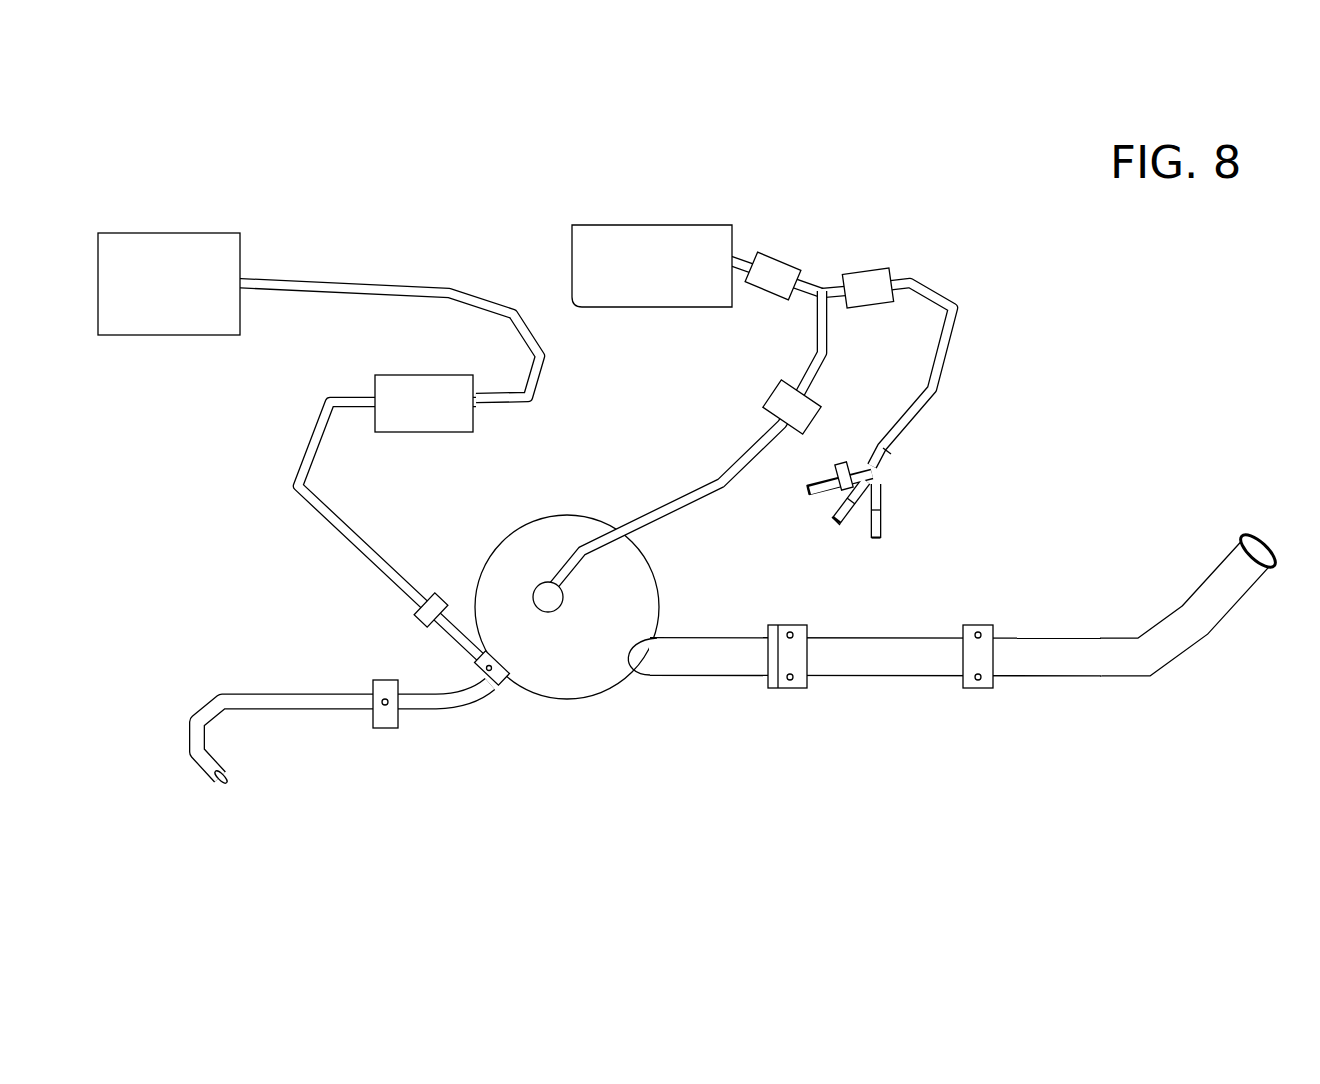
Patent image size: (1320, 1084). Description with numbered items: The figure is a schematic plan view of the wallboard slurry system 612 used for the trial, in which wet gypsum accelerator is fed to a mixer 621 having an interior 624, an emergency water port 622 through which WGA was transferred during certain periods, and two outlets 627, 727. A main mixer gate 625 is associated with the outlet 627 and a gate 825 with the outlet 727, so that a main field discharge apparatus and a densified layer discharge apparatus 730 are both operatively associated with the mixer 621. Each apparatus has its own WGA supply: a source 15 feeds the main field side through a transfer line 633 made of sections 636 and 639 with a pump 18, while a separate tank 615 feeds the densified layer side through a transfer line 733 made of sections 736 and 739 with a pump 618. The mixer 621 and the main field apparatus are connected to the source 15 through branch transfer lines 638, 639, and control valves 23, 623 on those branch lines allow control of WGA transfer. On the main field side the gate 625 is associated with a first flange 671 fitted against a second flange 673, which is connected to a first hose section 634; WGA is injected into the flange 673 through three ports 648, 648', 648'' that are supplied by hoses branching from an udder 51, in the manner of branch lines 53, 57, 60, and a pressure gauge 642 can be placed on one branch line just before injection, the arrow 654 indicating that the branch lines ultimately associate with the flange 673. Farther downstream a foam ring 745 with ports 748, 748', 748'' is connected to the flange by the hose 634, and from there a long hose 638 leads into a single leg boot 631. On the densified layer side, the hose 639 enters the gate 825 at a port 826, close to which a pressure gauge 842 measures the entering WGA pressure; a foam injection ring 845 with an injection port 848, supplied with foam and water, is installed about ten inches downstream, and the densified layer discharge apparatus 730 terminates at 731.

The WGA source 15 is at (675, 250).
The pump 18 is at (777, 273).
The control valve 23 is at (870, 283).
The udder 51 is at (878, 468).
The branch line 53 is at (818, 482).
The branch line 57 is at (845, 518).
The branch line 60 is at (878, 522).
The system 612 is at (557, 797).
The WGA source 615 is at (180, 257).
The pump 618 is at (420, 392).
The mixer 621 is at (520, 683).
The emergency water port 622 is at (543, 585).
The control valve 623 is at (780, 398).
The interior 624 is at (590, 654).
The main mixer gate 625 is at (718, 658).
The outlet 627 is at (630, 657).
The single leg boot 631 is at (1260, 548).
The transfer line 633 is at (997, 258).
The first hose section 634 is at (888, 665).
The transfer line section 636 is at (744, 257).
The branch transfer line / hose 638 is at (822, 333).
The branch transfer line 639 is at (955, 322).
The pressure gauge 642 is at (848, 468).
The injection port 648 is at (868, 629).
The injection port 648' is at (873, 621).
The injection port 648'' is at (791, 731).
The arrow 654 is at (784, 602).
The first flange 671 is at (768, 690).
The second flange 673 is at (807, 690).
The outlet 727 is at (503, 653).
The densified layer discharge apparatus 730 is at (303, 730).
The termination of densified layer discharge apparatus 731 is at (227, 798).
The transfer line 733 is at (280, 298).
The transfer line section 736 is at (402, 290).
The transfer line section 739 is at (407, 592).
The foam ring 745 is at (987, 683).
The port 748 is at (1016, 625).
The port 748' is at (1064, 606).
The port 748'' is at (950, 726).
The gate 825 is at (490, 690).
The port 826 is at (473, 662).
The pressure gauge 842 is at (437, 598).
The foam injection ring 845 is at (390, 717).
The injection port 848 is at (383, 701).